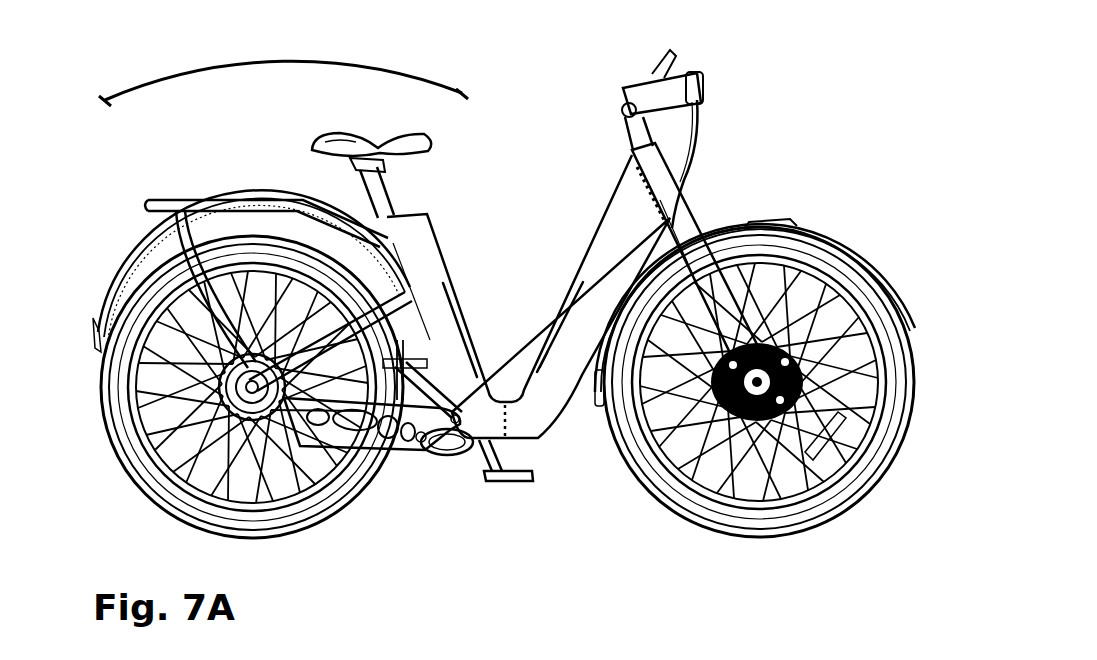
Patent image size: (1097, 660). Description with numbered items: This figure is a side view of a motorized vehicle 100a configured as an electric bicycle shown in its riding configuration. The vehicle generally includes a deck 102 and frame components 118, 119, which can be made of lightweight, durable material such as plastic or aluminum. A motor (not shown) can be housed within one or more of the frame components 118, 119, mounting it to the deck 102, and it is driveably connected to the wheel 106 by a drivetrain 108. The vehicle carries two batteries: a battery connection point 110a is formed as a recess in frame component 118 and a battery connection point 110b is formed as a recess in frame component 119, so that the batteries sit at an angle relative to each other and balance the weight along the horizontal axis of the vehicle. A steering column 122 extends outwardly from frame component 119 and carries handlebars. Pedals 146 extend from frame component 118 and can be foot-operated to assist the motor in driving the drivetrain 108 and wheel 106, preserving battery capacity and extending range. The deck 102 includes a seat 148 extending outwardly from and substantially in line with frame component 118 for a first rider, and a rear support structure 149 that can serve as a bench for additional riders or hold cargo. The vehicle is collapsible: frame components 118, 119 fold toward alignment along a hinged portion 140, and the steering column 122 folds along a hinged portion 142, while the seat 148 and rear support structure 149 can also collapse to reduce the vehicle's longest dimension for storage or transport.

The motorized vehicle 100a is at (828, 118).
The deck 102 is at (268, 59).
The wheel 106 is at (262, 538).
The drivetrain 108 is at (447, 458).
The battery connection point 110a is at (450, 282).
The battery connection point 110b is at (552, 240).
The frame component 118 is at (405, 246).
The frame component 119 is at (550, 382).
The steering column 122 is at (683, 223).
The hinged portion 140 is at (513, 440).
The hinged portion 142 is at (633, 170).
The pedals 146 is at (507, 483).
The seat 148 is at (410, 132).
The rear support structure 149 is at (208, 203).